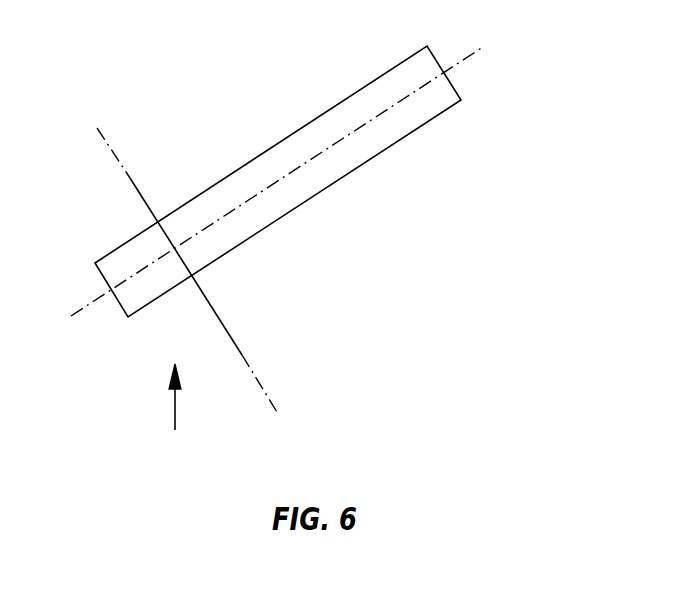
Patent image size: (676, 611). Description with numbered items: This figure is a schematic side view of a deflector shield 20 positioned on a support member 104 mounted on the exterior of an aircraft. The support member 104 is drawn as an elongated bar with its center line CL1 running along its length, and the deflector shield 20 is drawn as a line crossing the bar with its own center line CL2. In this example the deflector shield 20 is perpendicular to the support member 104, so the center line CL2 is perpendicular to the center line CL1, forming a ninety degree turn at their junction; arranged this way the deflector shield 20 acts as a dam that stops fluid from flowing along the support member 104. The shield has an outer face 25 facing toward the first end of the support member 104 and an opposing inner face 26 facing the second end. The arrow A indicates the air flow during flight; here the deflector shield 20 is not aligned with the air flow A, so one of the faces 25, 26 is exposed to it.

The support member 104 is at (335, 120).
The center line of the support member CL1 is at (477, 49).
The center line of the deflector shield CL2 is at (263, 390).
The deflector shield 20 is at (140, 195).
The outer face 25 is at (225, 323).
The inner face 26 is at (207, 302).
The air flow A is at (175, 408).